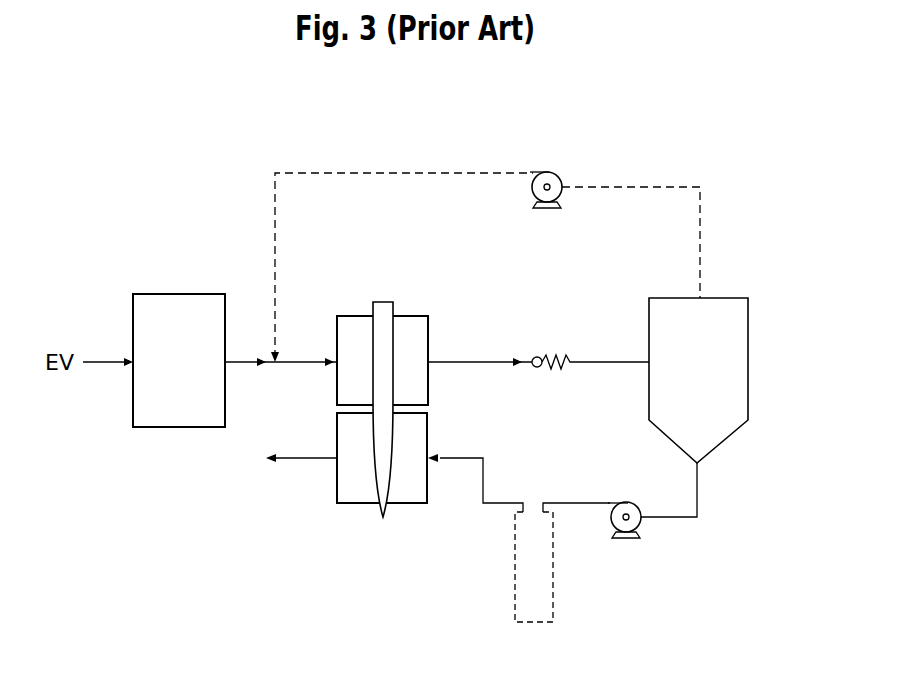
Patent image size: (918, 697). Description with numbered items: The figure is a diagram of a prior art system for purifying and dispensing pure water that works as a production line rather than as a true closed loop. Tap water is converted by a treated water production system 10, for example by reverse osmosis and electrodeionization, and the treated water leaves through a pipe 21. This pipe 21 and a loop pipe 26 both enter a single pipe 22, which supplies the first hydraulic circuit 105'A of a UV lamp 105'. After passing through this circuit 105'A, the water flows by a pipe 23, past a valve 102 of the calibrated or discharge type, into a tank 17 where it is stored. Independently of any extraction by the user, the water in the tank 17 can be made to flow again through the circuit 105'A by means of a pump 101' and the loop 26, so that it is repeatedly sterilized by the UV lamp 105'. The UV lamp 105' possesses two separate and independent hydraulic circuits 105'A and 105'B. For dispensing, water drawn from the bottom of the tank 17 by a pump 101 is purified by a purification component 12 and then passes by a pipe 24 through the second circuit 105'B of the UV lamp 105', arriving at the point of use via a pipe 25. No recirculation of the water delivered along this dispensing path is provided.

The treated water production system 10 is at (133, 318).
The purification component 12 is at (515, 590).
The tank 17 is at (750, 362).
The pipe 21 is at (243, 365).
The pipe 22 is at (287, 365).
The pipe 23 is at (480, 362).
The pipe 24 is at (487, 481).
The pipe 25 is at (300, 462).
The loop 26 is at (422, 172).
The pump 101 is at (636, 548).
The pump 101' is at (555, 159).
The valve 102 is at (538, 355).
The UV lamp 105' is at (351, 438).
The hydraulic circuit 105'A is at (406, 328).
The hydraulic circuit 105'B is at (400, 492).